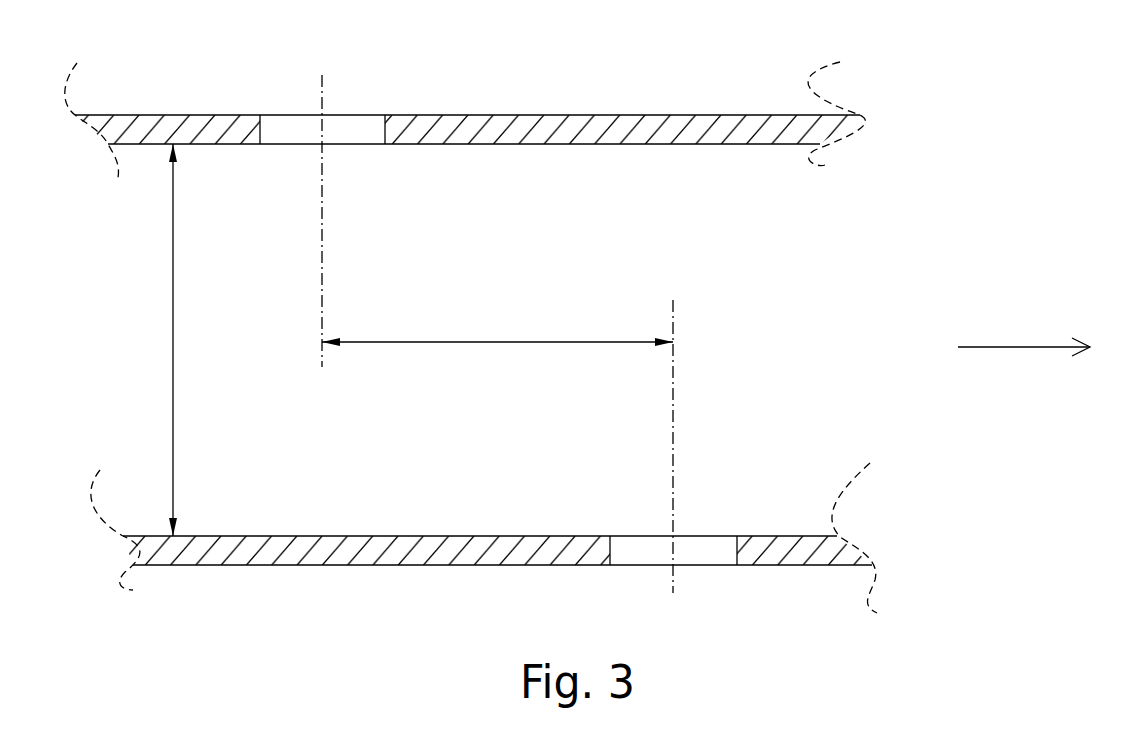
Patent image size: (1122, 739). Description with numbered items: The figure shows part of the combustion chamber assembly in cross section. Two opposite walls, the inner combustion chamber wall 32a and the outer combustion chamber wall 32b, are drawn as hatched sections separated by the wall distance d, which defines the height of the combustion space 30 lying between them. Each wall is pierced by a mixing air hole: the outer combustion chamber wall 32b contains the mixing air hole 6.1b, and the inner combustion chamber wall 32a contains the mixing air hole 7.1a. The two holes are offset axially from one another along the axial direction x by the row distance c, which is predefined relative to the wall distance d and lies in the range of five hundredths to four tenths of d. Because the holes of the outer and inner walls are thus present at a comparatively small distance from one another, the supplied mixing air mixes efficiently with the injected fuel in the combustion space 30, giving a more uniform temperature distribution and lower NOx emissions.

The combustion space 30 is at (812, 329).
The outer combustion chamber wall 32b is at (465, 198).
The inner combustion chamber wall 32a is at (484, 477).
The mixing air hole 6.1b is at (340, 115).
The mixing air hole 7.1a is at (695, 565).